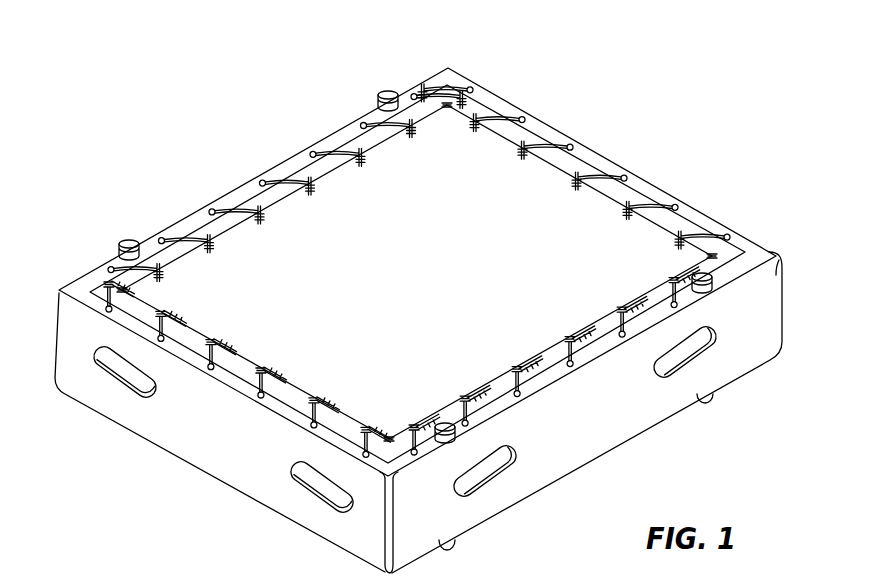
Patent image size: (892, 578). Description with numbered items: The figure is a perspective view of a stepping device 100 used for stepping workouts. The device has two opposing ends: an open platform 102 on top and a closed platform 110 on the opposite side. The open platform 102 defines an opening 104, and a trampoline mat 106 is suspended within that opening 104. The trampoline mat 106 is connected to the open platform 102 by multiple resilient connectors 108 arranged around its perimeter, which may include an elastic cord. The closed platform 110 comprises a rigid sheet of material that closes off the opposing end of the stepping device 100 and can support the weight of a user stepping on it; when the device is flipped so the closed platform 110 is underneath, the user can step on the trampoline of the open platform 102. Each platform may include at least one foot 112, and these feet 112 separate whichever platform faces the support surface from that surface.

The stepping device 100 is at (646, 92).
The open platform 102 is at (266, 157).
The opening 104 is at (509, 128).
The trampoline mat 106 is at (436, 285).
The resilient connectors 108 is at (654, 212).
The closed platform 110 is at (668, 413).
The foot 112 is at (385, 93).